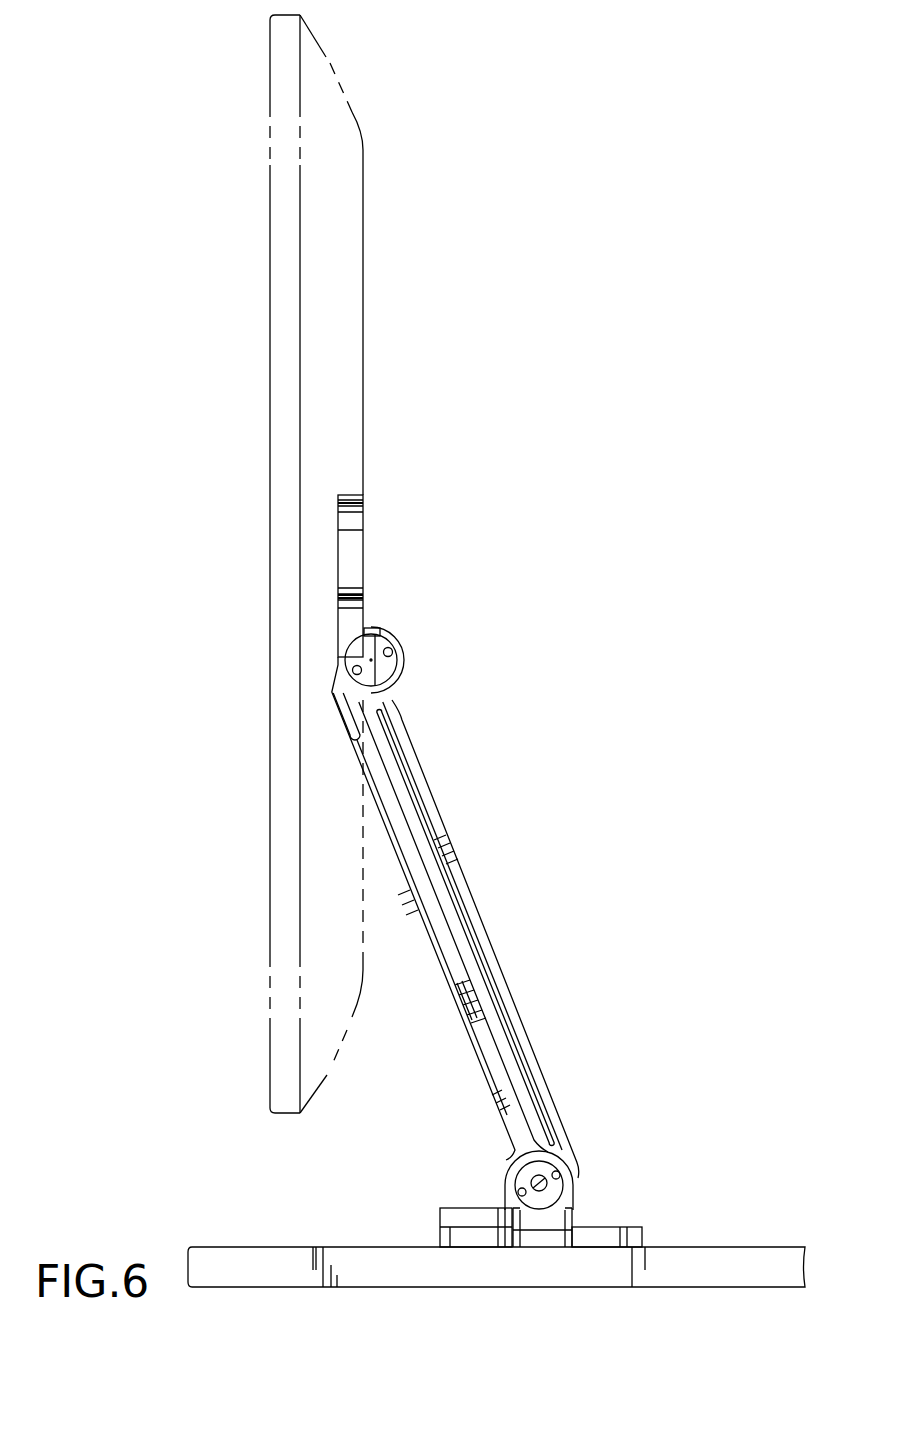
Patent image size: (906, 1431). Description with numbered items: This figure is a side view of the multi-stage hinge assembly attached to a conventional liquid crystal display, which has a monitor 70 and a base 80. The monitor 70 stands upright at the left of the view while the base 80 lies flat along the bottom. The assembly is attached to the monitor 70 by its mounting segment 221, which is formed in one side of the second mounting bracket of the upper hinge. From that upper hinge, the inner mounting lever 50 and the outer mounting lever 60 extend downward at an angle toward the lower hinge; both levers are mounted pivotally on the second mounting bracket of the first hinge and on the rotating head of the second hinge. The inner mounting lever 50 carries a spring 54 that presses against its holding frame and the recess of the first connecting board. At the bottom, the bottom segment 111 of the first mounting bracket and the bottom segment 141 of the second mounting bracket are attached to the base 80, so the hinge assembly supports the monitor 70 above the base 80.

The monitor 70 is at (358, 320).
The mounting segment 221 is at (357, 572).
The inner mounting lever 50 is at (403, 830).
The outer mounting lever 60 is at (445, 848).
The spring 54 is at (457, 1007).
The bottom segment 141 is at (470, 1232).
The bottom segment 111 is at (600, 1228).
The base 80 is at (655, 1268).